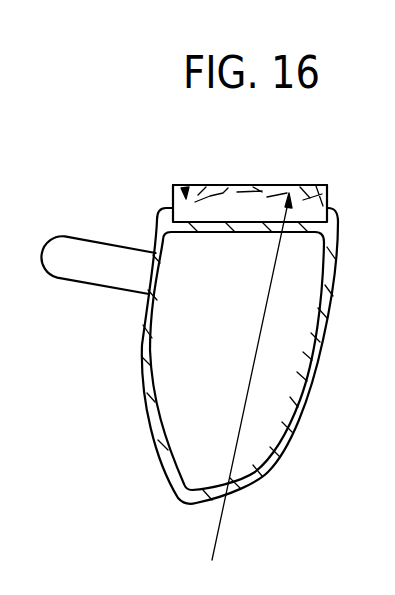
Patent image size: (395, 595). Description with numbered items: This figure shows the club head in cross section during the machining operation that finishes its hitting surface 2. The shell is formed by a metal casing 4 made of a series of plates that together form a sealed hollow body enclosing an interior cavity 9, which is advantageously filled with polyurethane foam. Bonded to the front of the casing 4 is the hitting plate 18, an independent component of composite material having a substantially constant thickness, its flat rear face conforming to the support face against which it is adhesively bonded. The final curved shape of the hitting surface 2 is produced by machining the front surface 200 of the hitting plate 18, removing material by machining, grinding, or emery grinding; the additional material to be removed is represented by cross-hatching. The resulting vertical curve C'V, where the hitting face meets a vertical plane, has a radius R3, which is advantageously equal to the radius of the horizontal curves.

The hitting surface 2 is at (228, 187).
The hitting plate 18 is at (244, 207).
The front surface 200 is at (288, 188).
The interior cavity 9 is at (281, 391).
The metal casing 4 is at (273, 463).
The radius R3 is at (232, 376).
The vertical curve C'V is at (168, 159).